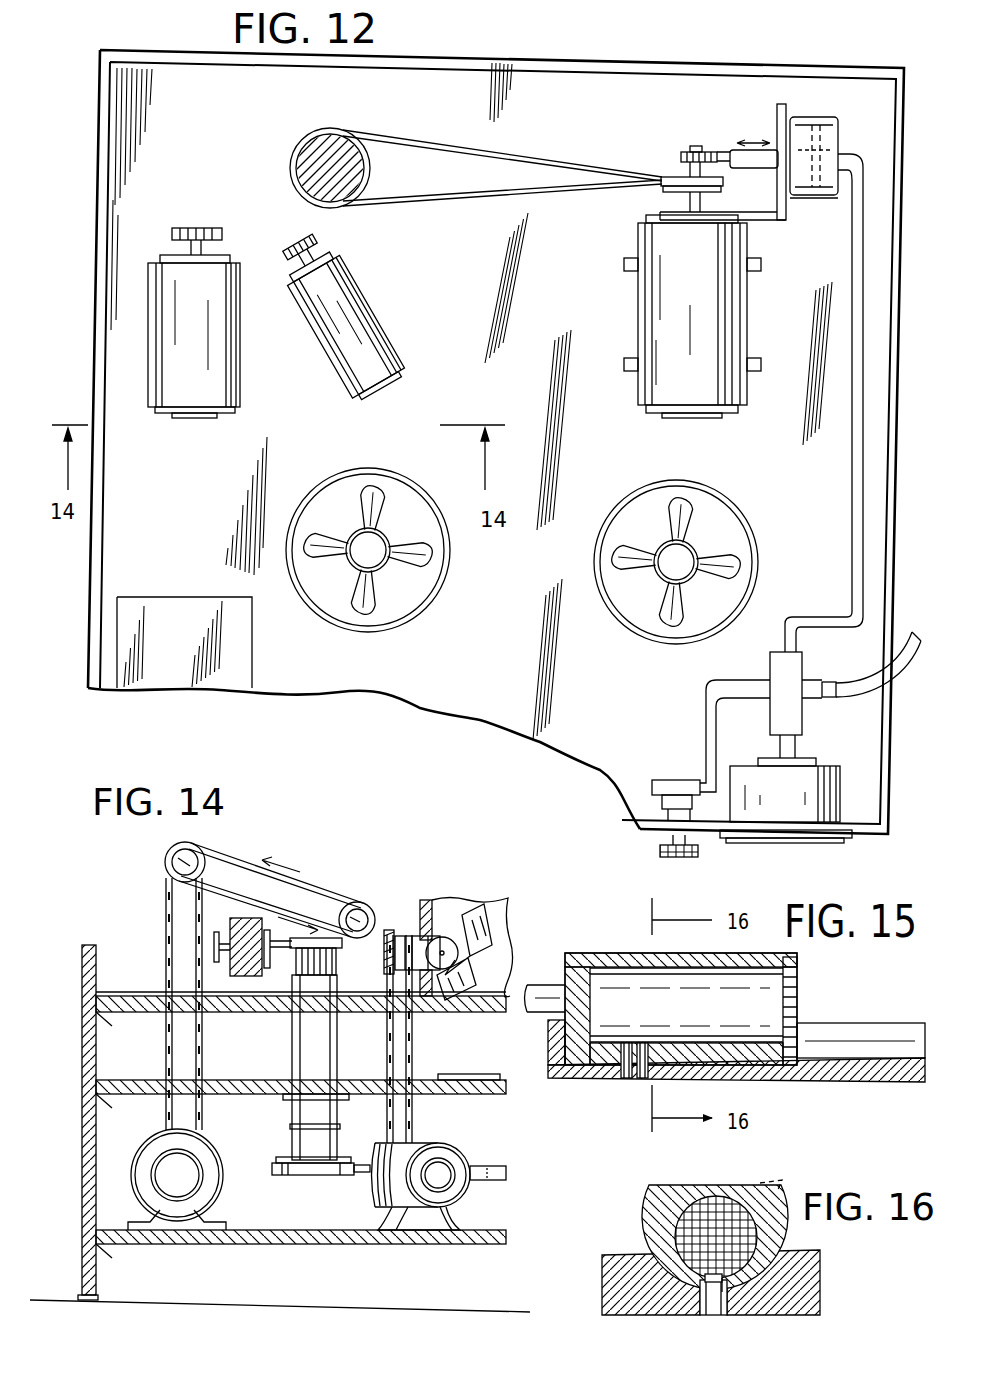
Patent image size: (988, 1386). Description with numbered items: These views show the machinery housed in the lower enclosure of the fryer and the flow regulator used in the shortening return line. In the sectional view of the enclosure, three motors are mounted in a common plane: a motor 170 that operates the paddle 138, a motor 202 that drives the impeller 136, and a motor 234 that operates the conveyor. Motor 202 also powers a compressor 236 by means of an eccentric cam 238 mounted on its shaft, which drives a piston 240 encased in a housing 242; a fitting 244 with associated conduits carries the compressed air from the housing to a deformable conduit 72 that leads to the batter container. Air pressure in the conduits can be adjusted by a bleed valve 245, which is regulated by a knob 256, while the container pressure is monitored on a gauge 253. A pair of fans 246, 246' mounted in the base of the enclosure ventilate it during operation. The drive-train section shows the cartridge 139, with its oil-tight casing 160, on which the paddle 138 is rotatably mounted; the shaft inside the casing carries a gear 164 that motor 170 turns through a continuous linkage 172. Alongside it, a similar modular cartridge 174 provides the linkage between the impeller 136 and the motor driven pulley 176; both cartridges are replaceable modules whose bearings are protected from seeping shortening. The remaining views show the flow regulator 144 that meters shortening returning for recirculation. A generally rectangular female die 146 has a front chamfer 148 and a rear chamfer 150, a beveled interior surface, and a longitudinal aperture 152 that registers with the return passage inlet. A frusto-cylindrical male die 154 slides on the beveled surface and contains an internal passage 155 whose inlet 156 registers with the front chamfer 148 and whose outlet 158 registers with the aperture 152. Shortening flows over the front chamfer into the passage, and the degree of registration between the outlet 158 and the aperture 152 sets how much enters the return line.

In FIG. 12, the deformable conduit 72 is at (898, 668).
In FIG. 14, the impeller 136 is at (300, 957).
In FIG. 14, the paddle 138 is at (480, 918).
In FIG. 14, the cartridge 139 is at (412, 933).
In FIG. 15, the flow regulator 144 is at (806, 968).
In FIG. 16, the flow regulator 144 is at (640, 1222).
In FIG. 15, the female die 146 is at (855, 1023).
In FIG. 16, the female die 146 is at (627, 1300).
In FIG. 15, the front chamfer 148 is at (858, 1066).
In FIG. 15, the rear chamfer 150 is at (568, 1046).
In FIG. 15, the longitudinal aperture 152 is at (648, 1078).
In FIG. 16, the longitudinal aperture 152 is at (712, 1305).
In FIG. 15, the male die 154 is at (625, 940).
In FIG. 15, the passage 155 is at (724, 1021).
In FIG. 15, the inlet 156 is at (798, 1000).
In FIG. 16, the inlet 156 is at (703, 1210).
In FIG. 15, the outlet 158 is at (647, 1072).
In FIG. 16, the outlet 158 is at (724, 1284).
In FIG. 14, the casing 160 is at (464, 930).
In FIG. 14, the gear 164 is at (392, 930).
In FIG. 12, the motor 170 is at (382, 352).
In FIG. 14, the motor 170 is at (455, 1197).
In FIG. 14, the continuous linkage 172 is at (413, 1121).
In FIG. 12, the modular cartridge 174 is at (283, 180).
In FIG. 14, the modular cartridge 174 is at (290, 1070).
In FIG. 14, the motor driven pulley 176 is at (298, 1178).
In FIG. 12, the motor 202 is at (658, 316).
In FIG. 12, the motor 234 is at (226, 371).
In FIG. 14, the motor 234 is at (187, 1212).
In FIG. 12, the compressor 236 is at (790, 103).
In FIG. 12, the eccentric cam 238 is at (684, 153).
In FIG. 12, the piston 240 is at (815, 212).
In FIG. 12, the housing 242 is at (834, 132).
In FIG. 12, the fitting 244 is at (868, 170).
In FIG. 12, the bleed valve 245 is at (668, 780).
In FIG. 12, the fan 246 is at (387, 556).
In FIG. 12, the fan 246' is at (666, 569).
In FIG. 12, the gauge 253 is at (782, 843).
In FIG. 12, the knob 256 is at (660, 850).